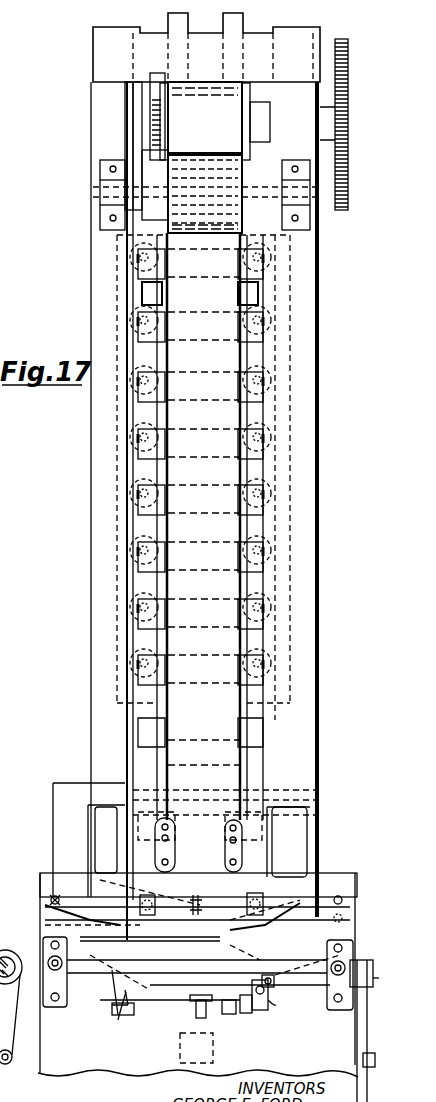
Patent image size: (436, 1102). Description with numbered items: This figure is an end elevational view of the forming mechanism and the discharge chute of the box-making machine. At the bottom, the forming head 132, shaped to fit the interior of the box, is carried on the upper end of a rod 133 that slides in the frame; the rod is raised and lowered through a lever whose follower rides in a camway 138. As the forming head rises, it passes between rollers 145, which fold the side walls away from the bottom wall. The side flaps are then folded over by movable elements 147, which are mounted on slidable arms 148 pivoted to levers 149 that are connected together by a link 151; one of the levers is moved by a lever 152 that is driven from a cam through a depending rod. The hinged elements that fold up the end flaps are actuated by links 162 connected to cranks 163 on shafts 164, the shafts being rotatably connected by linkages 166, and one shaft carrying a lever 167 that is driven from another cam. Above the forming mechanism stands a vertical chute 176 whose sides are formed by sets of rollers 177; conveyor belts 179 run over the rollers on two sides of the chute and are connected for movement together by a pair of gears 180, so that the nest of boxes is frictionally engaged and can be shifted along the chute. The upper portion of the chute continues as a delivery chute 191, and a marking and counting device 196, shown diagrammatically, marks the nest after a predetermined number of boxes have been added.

The delivery chute 191 is at (227, 22).
The gears 180 is at (342, 210).
The conveyor belts 179 is at (219, 480).
The rollers 177 is at (165, 384).
The vertical chute 176 is at (112, 507).
The camway 138 is at (10, 720).
The marking and counting device 196 is at (63, 797).
The slidable arms 148 is at (83, 897).
The rollers 145 is at (163, 890).
The movable elements 147 is at (157, 905).
The levers 149 is at (48, 923).
The lever 152 is at (366, 961).
The lever 167 is at (357, 1042).
The links 162 is at (274, 982).
The cranks 163 is at (115, 1003).
The shafts 164 is at (250, 1010).
The linkages 166 is at (275, 1003).
The link 151 is at (118, 1020).
The rod 133 is at (180, 1052).
The forming head 132 is at (230, 1014).